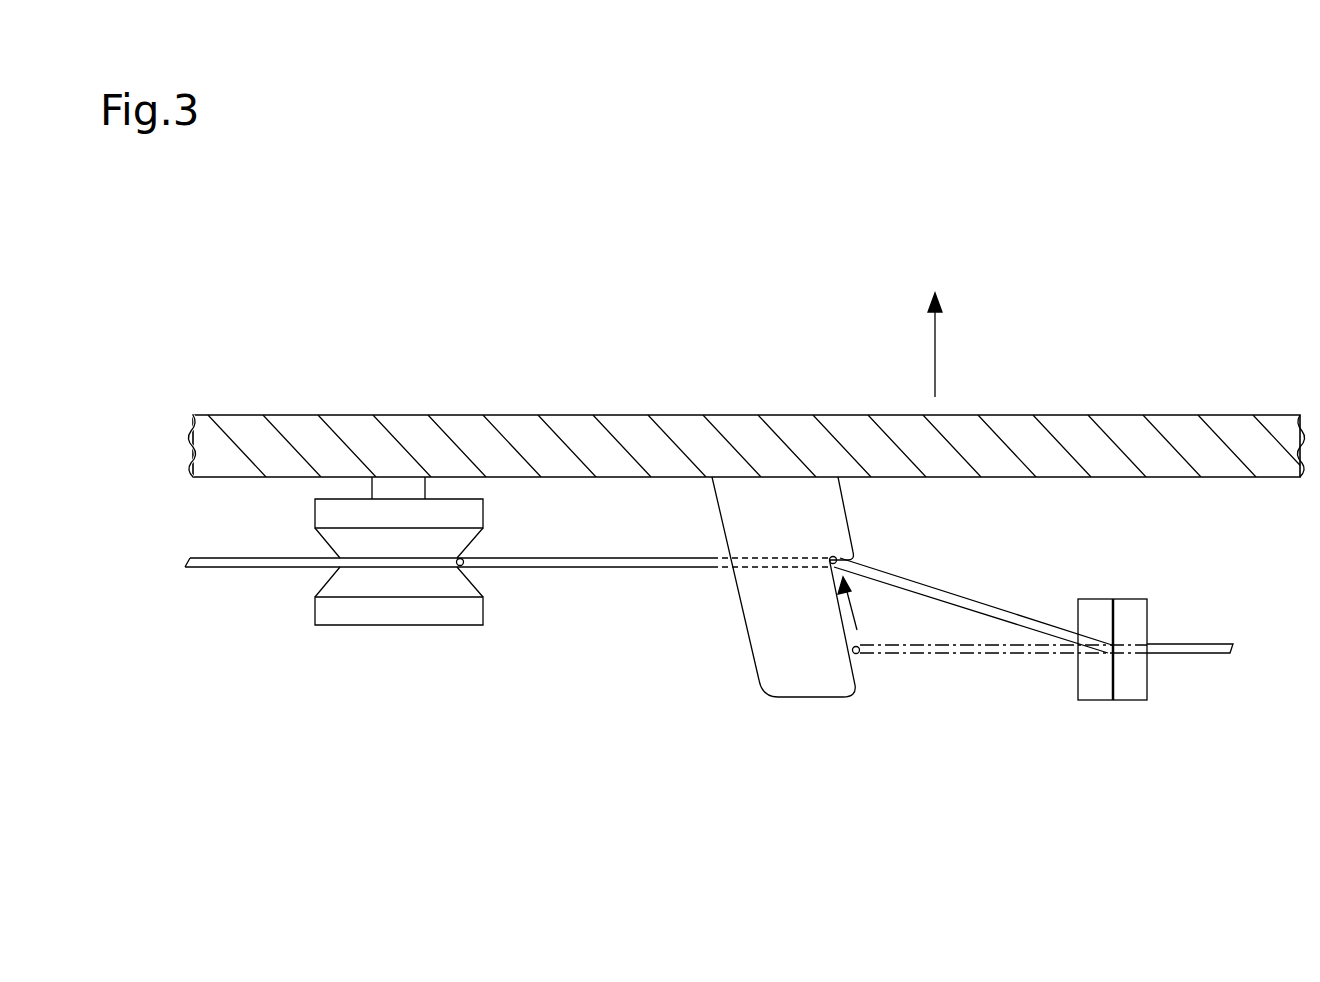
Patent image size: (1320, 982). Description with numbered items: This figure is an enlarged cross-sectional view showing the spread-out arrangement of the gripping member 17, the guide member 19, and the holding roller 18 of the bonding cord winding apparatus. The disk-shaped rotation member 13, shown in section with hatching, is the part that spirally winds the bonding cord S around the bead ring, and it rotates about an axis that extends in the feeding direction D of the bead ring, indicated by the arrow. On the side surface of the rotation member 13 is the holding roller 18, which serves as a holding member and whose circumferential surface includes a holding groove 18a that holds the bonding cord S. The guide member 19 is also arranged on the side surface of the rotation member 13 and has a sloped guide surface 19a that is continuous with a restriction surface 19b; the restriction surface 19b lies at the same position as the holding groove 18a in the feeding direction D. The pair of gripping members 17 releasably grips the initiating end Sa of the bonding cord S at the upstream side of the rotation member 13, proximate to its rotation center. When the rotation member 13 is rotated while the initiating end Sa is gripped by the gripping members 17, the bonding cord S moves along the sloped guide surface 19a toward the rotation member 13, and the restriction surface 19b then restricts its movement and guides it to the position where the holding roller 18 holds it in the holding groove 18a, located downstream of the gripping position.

The rotation member 13 is at (675, 415).
The gripping member 17 is at (1124, 599).
The holding roller 18 is at (397, 618).
The holding groove 18a is at (464, 566).
The guide member 19 is at (753, 608).
The sloped guide surface 19a is at (861, 673).
The restriction surface 19b is at (843, 561).
The bonding cord S is at (618, 572).
The initiating end Sa is at (1198, 642).
The feeding direction D is at (935, 328).